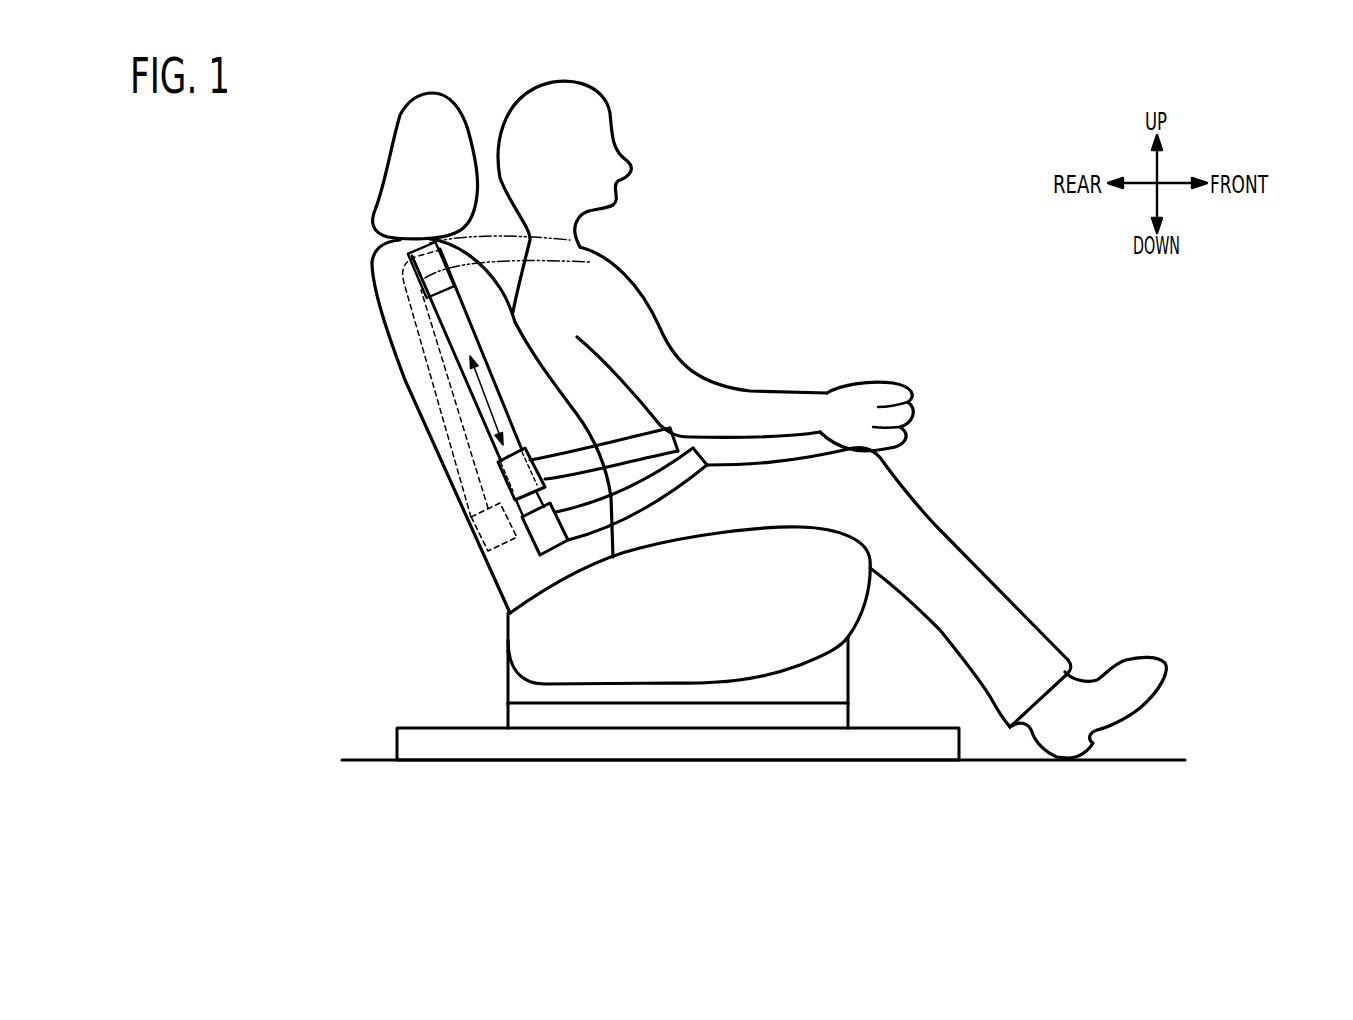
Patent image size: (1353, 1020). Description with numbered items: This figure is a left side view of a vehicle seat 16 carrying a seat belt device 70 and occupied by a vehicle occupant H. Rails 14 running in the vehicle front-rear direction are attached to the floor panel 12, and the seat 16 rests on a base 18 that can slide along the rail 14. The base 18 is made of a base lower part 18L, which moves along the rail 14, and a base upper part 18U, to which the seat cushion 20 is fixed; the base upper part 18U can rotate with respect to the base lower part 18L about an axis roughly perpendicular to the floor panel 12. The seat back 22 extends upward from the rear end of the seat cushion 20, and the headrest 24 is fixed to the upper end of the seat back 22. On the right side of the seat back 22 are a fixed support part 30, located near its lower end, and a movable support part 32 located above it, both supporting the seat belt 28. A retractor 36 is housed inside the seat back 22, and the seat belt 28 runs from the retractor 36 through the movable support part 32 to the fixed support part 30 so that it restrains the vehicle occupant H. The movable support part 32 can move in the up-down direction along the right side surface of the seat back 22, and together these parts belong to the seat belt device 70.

The floor panel 12 is at (356, 755).
The rail 14 is at (458, 743).
The seat 16 is at (376, 98).
The base 18 is at (610, 670).
The base upper part 18U is at (508, 678).
The base lower part 18L is at (508, 717).
The seat cushion 20 is at (508, 633).
The seat back 22 is at (400, 367).
The headrest 24 is at (390, 168).
The seat belt 28 is at (673, 481).
The fixed support part 30 is at (553, 540).
The movable support part 32 is at (520, 456).
The retractor 36 is at (490, 531).
The seat belt device 70 is at (398, 300).
The vehicle occupant H is at (600, 93).